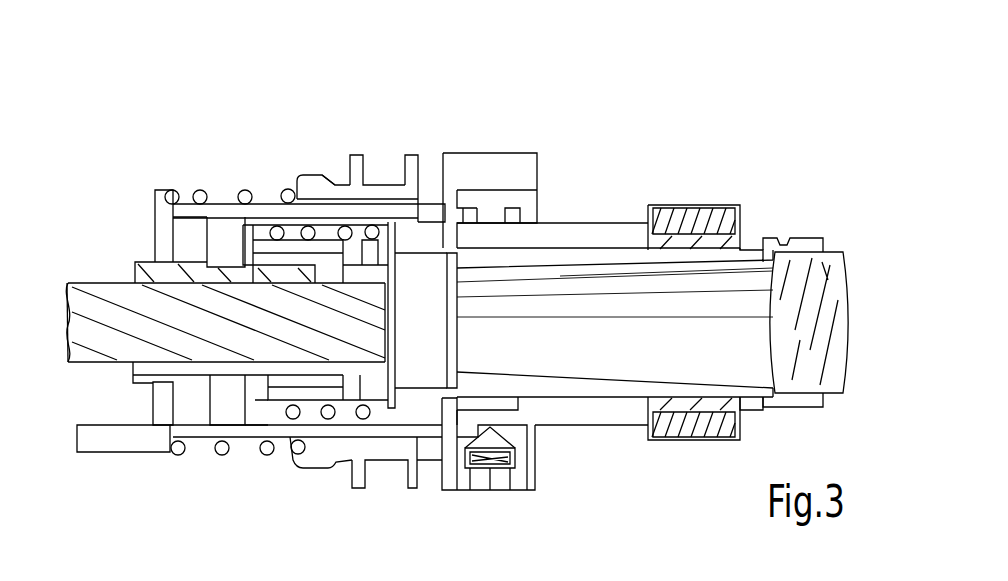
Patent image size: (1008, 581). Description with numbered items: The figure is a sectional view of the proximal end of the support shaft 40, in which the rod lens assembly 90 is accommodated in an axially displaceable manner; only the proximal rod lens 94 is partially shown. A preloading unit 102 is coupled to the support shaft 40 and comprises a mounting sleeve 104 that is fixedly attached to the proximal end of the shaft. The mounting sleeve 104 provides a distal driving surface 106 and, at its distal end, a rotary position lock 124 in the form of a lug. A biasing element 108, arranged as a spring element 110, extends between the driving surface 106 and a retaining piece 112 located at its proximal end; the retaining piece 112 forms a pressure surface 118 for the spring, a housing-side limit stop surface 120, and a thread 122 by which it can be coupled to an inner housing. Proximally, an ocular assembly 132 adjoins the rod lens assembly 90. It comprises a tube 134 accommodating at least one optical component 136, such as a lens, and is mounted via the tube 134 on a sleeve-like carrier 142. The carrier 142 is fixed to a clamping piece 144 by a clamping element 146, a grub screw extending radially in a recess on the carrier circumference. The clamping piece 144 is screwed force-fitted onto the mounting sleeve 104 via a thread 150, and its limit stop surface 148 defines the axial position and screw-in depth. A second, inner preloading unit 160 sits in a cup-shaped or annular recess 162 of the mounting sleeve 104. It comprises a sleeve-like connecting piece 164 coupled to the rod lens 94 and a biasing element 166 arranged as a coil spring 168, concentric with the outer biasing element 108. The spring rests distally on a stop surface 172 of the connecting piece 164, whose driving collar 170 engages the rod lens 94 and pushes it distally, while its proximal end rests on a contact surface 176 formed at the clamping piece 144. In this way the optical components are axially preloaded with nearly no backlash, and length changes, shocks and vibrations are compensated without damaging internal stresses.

The support shaft 40 is at (88, 278).
The rod lens assembly 90 is at (108, 281).
The proximal rod lens 94 is at (122, 322).
The preloading unit 102 is at (268, 158).
The mounting sleeve 104 is at (200, 255).
The driving surface 106 is at (160, 192).
The biasing element 108 is at (230, 456).
The spring element 110 is at (222, 456).
The retaining piece 112 is at (393, 190).
The pressure surface 118 is at (298, 195).
The housing-side limit stop surface 120 is at (356, 186).
The thread 122 is at (320, 183).
The rotary position lock 124 is at (100, 448).
The ocular assembly 132 is at (611, 246).
The tube 134 is at (648, 232).
The optical component 136 is at (785, 275).
The carrier 142 is at (632, 416).
The clamping piece 144 is at (523, 460).
The clamping element 146 is at (490, 488).
The limit stop surface 148 is at (447, 456).
The thread 150 is at (440, 212).
The preloading unit 160 is at (410, 284).
The recess 162 is at (203, 434).
The connecting piece 164 is at (452, 253).
The biasing element 166 is at (398, 243).
The spring 168 is at (380, 402).
The driving collar 170 is at (315, 438).
The stop surface 172 is at (165, 392).
The contact surface 176 is at (393, 440).